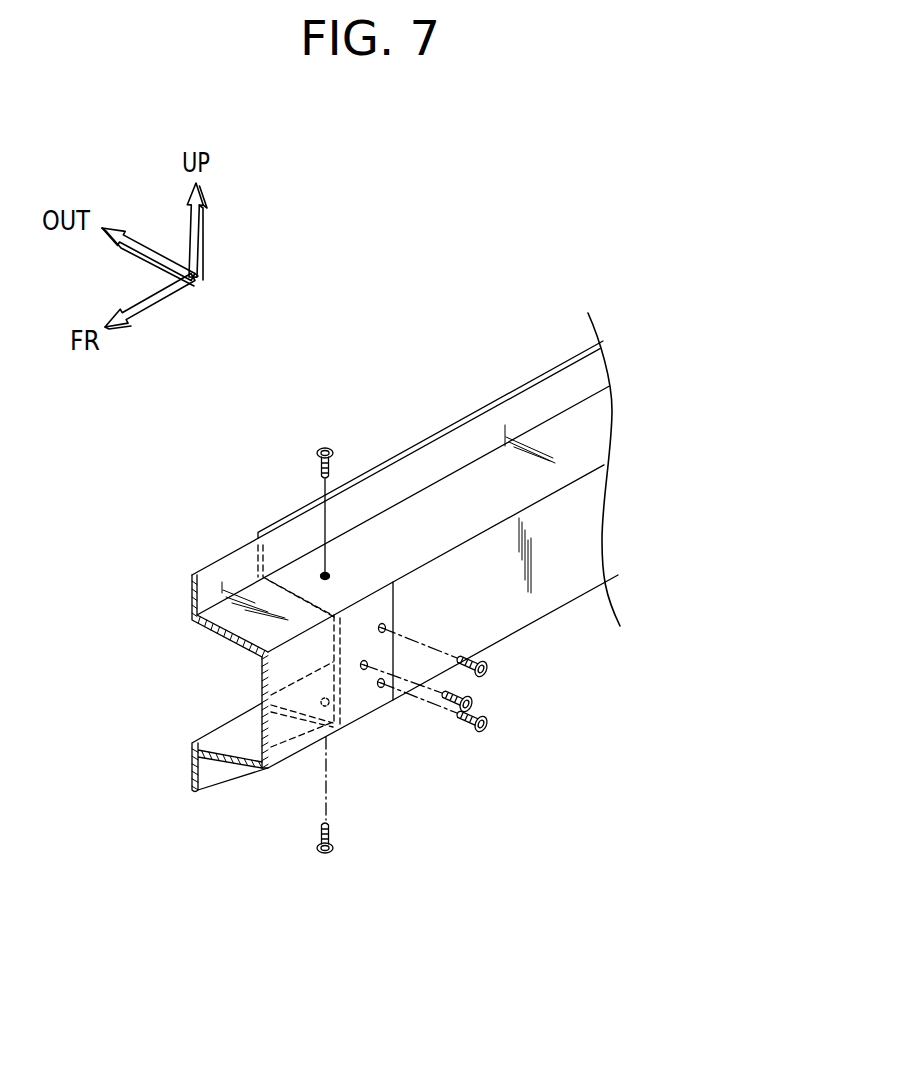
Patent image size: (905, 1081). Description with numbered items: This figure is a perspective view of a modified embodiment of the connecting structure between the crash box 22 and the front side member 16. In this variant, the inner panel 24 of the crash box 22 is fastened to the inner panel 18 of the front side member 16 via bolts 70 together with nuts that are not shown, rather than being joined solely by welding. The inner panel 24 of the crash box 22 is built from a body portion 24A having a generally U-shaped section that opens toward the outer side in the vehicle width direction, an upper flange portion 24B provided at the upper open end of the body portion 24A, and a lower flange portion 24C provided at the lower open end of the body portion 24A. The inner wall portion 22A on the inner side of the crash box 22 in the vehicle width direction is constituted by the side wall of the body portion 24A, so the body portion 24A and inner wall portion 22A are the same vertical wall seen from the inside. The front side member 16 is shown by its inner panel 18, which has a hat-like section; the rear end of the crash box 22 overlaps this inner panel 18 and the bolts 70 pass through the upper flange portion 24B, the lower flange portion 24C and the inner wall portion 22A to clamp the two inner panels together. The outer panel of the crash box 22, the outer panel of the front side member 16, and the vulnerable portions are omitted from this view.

The front side member 16 is at (406, 500).
The front side member inner panel 18 is at (501, 397).
The crash box 22 is at (254, 679).
The inner panel 24 is at (254, 685).
The body portion 24A is at (312, 753).
The inner wall portion 22A is at (292, 757).
The upper flange portion 24B is at (191, 577).
The lower flange portion 24C is at (197, 790).
The bolts 70 is at (325, 446).